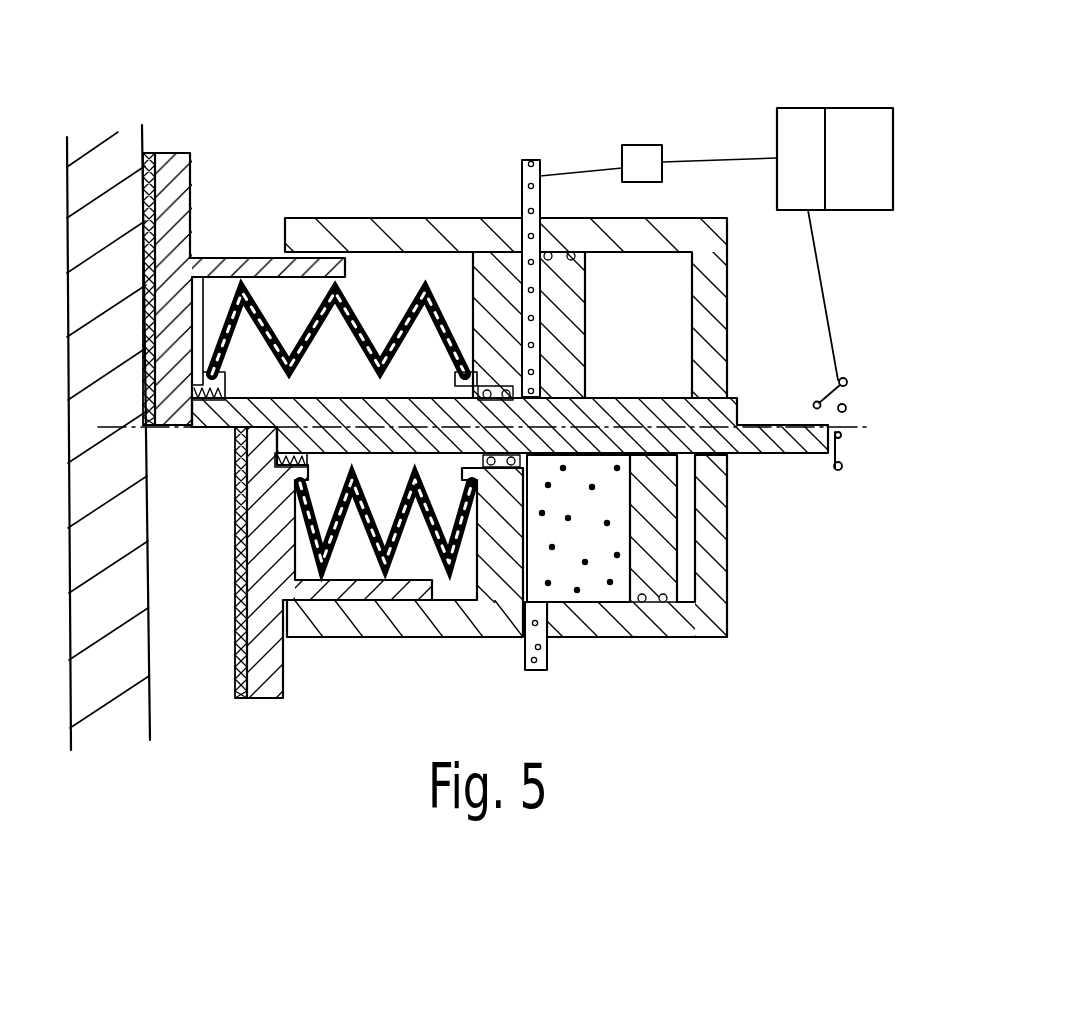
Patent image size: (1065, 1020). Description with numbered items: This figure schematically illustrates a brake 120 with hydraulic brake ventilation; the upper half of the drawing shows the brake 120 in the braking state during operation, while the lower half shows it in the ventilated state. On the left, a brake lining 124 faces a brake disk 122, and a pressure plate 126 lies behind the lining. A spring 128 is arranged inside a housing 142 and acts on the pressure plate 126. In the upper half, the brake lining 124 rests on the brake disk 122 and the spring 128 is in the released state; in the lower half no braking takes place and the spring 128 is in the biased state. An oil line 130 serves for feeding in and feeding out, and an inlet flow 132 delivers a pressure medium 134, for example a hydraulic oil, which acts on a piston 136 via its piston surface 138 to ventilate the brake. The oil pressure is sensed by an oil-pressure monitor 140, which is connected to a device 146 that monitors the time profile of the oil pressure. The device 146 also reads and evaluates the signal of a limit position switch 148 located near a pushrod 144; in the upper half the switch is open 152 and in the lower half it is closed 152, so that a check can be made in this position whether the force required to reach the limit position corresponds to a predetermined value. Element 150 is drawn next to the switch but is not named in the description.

The brake 120 is at (436, 92).
The brake disk 122 is at (103, 128).
The brake lining 124 is at (150, 153).
The pressure plate 126 is at (183, 193).
The spring 128 is at (425, 290).
The oil line 130 is at (545, 160).
The inlet flow 132 is at (537, 665).
The pressure medium 134 is at (610, 583).
The piston 136 is at (663, 555).
The piston surface 138 is at (633, 520).
The oil-pressure monitor 140 is at (653, 153).
The housing 142 is at (720, 280).
The pushrod 144 is at (838, 418).
The device 146 is at (893, 135).
The limit position switch 148 is at (843, 360).
The sensor contact 150 is at (828, 380).
The switch state 152 is at (848, 455).